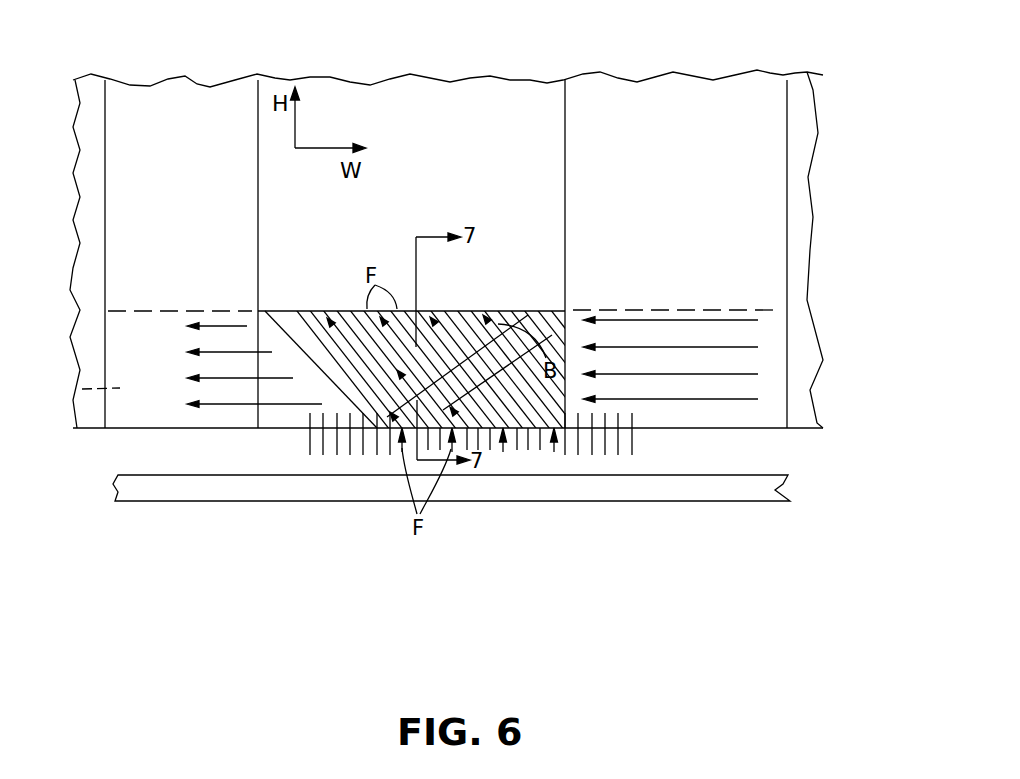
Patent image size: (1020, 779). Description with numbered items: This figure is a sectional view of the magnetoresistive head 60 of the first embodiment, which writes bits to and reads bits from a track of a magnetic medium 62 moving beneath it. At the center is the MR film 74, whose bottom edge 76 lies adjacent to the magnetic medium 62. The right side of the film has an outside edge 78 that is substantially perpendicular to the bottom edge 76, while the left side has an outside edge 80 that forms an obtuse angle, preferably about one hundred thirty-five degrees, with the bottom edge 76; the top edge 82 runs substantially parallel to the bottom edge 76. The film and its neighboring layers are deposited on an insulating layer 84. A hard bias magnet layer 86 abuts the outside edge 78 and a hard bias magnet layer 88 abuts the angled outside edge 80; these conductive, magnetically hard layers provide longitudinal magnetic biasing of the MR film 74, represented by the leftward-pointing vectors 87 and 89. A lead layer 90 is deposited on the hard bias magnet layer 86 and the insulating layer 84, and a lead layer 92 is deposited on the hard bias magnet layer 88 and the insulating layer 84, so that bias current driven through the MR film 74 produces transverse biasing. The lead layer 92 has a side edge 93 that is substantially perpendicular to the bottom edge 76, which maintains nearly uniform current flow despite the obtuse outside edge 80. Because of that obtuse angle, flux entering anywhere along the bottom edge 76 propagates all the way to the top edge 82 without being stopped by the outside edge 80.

The MR head 60 is at (803, 56).
The magnetic medium 62 is at (757, 486).
The MR film 74 is at (543, 322).
The bottom edge 76 is at (535, 430).
The outside edge 78 is at (566, 388).
The outside edge 80 is at (342, 393).
The top edge 82 is at (333, 310).
The insulating layer 84 is at (800, 116).
The hard bias magnet layer 86 is at (773, 387).
The vector 87 is at (695, 375).
The hard bias magnet layer 88 is at (80, 390).
The vector 89 is at (227, 381).
The lead layer 90 is at (770, 266).
The lead layer 92 is at (115, 295).
The side edge 93 is at (264, 345).